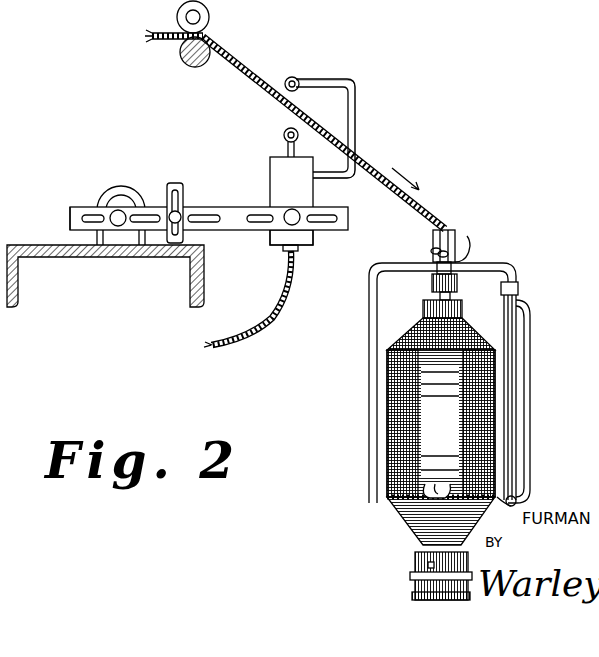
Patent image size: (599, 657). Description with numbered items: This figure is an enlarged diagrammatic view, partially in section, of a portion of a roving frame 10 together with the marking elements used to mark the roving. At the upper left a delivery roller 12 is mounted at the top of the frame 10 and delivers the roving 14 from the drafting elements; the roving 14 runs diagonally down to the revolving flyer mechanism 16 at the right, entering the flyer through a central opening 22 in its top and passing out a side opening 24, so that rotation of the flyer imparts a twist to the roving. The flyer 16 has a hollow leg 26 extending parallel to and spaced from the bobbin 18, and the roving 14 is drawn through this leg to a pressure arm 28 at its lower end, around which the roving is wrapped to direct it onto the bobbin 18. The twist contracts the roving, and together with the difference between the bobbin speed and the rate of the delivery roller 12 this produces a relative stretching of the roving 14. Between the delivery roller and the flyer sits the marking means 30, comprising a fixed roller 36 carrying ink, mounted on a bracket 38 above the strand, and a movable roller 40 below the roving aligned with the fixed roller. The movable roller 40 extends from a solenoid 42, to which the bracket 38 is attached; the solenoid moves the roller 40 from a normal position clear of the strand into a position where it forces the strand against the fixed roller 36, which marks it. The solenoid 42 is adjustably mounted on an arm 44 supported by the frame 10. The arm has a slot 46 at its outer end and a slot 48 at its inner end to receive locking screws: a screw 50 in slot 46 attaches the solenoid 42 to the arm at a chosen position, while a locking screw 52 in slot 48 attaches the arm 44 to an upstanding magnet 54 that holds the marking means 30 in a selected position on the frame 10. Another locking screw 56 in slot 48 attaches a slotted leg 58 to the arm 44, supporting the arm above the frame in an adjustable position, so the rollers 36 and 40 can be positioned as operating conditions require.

The roving frame 10 is at (36, 258).
The delivery roller 12 is at (182, 60).
The roving 14 is at (250, 68).
The flyer mechanism 16 is at (536, 272).
The bobbin 18 is at (455, 300).
The central opening 22 is at (458, 236).
The side opening 24 is at (431, 243).
The hollow leg 26 is at (516, 326).
The pressure arm 28 is at (405, 513).
The marking means 30 is at (366, 118).
The fixed roller 36 is at (294, 77).
The bracket 38 is at (346, 77).
The movable roller 40 is at (284, 136).
The solenoid 42 is at (272, 168).
The arm 44 is at (230, 223).
The slot 46 is at (328, 218).
The slot 48 is at (70, 215).
The locking screw 50 is at (316, 236).
The locking screw 52 is at (112, 212).
The upstanding magnet 54 is at (126, 188).
The locking screw 56 is at (182, 214).
The slotted leg 58 is at (180, 183).